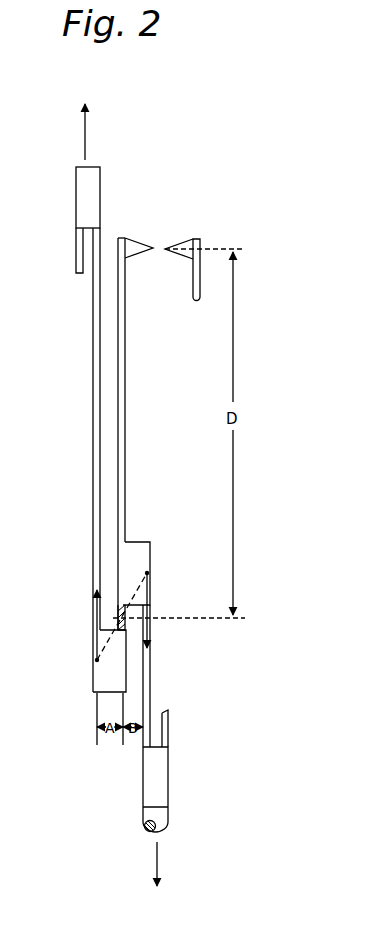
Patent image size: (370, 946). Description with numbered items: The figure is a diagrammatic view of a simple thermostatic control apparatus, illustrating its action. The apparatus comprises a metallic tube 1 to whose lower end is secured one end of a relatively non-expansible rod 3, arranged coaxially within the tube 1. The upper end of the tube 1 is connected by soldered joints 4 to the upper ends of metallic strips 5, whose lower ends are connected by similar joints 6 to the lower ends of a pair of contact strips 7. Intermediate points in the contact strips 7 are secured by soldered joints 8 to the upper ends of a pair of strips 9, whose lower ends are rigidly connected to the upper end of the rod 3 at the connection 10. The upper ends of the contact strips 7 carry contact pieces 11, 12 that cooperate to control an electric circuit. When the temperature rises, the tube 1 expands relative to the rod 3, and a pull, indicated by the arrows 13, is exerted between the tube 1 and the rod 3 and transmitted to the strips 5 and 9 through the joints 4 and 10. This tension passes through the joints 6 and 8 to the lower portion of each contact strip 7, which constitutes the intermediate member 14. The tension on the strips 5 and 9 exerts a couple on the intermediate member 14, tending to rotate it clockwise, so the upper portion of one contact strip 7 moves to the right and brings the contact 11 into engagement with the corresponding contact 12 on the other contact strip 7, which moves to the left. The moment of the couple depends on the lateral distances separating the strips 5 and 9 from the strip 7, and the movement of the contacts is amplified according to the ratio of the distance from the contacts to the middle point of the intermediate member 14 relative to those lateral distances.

The tube 1 is at (75, 257).
The rod 3 is at (170, 818).
The soldered joints 4 is at (76, 199).
The metallic strips 5 is at (92, 302).
The joints 6 is at (93, 675).
The contact strips 7 is at (201, 282).
The soldered joints 8 is at (150, 553).
The strips 9 is at (150, 658).
The rigid connection 10 is at (170, 763).
The contact piece 11 is at (135, 238).
The contact piece 12 is at (172, 240).
The arrows 13 is at (83, 127).
The intermediate member 14 is at (127, 612).